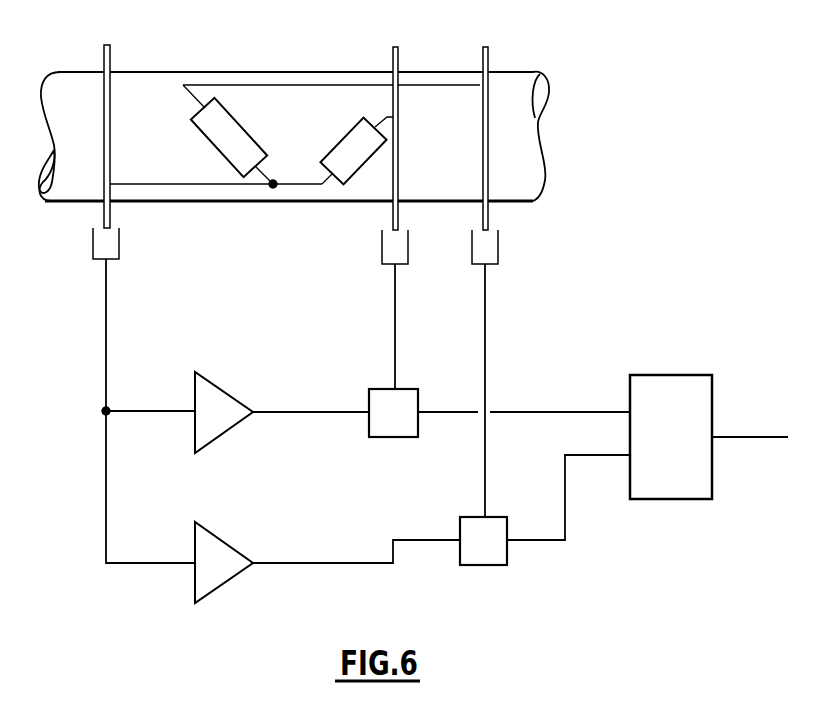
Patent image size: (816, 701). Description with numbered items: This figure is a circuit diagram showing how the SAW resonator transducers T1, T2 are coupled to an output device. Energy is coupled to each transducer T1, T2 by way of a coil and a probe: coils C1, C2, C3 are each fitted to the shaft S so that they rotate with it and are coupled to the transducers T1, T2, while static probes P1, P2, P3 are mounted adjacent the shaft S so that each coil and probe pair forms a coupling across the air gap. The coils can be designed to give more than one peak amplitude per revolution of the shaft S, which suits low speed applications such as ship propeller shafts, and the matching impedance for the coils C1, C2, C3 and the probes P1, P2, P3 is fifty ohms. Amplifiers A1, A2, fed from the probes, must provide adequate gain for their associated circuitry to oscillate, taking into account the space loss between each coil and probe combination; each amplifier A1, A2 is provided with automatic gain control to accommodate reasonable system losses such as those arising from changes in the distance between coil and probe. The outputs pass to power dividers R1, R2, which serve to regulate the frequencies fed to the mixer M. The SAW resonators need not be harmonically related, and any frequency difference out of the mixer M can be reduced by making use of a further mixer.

The shaft S is at (82, 79).
The coil C1 is at (110, 206).
The coil C2 is at (400, 52).
The coil C3 is at (490, 52).
The SAW resonator transducer T1 is at (207, 128).
The SAW resonator transducer T2 is at (350, 140).
The static probe P1 is at (97, 249).
The static probe P2 is at (383, 251).
The static probe P3 is at (499, 252).
The amplifier A1 is at (221, 425).
The amplifier A2 is at (221, 577).
The power divider R1 is at (382, 394).
The power divider R2 is at (471, 521).
The mixer M is at (679, 448).